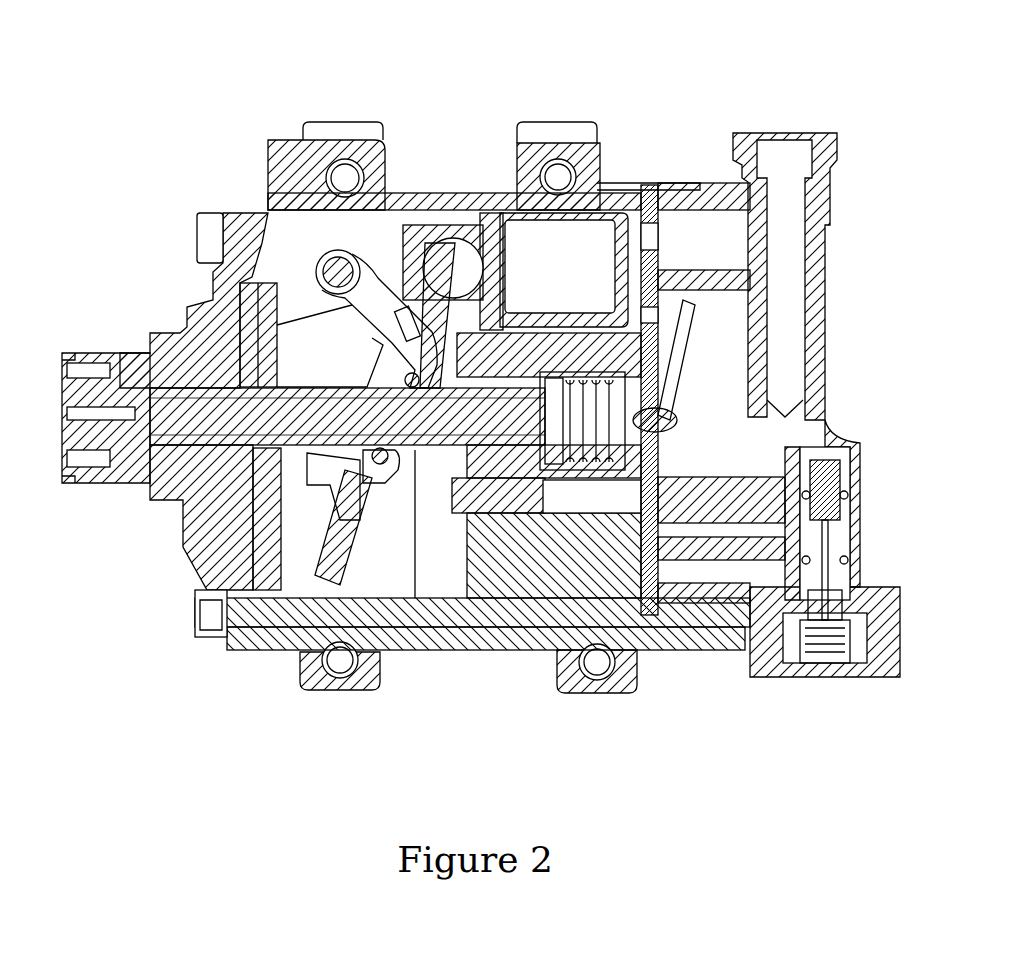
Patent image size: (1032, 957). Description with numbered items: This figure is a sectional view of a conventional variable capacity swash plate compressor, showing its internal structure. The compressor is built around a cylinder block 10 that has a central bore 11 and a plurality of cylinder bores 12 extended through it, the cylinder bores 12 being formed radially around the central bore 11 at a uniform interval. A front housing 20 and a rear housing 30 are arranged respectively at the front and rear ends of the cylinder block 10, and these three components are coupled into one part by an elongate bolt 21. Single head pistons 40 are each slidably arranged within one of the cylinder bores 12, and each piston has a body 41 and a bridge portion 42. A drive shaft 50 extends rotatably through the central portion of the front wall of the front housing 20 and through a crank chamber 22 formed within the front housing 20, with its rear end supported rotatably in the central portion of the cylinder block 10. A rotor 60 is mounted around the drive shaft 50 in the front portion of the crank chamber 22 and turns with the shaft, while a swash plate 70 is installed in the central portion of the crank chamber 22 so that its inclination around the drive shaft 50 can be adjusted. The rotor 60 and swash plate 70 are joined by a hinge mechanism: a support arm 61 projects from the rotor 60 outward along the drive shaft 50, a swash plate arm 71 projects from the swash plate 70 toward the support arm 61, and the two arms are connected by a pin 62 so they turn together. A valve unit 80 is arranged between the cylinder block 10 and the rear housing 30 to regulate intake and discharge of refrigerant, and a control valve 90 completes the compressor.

The cylinder block 10 is at (505, 215).
The central bore 11 is at (653, 232).
The cylinder bores 12 is at (550, 377).
The front housing 20 is at (247, 212).
The elongate bolt 21 is at (213, 628).
The crank chamber 22 is at (310, 253).
The rear housing 30 is at (813, 248).
The single head pistons 40 is at (455, 50).
The body 41 is at (470, 258).
The bridge portion 42 is at (452, 222).
The drive shaft 50 is at (207, 408).
The rotor 60 is at (278, 612).
The support arm 61 is at (247, 303).
The pin 62 is at (357, 258).
The swash plate 70 is at (348, 560).
The swash plate arm 71 is at (343, 327).
The valve unit 80 is at (700, 140).
The control valve 90 is at (775, 688).